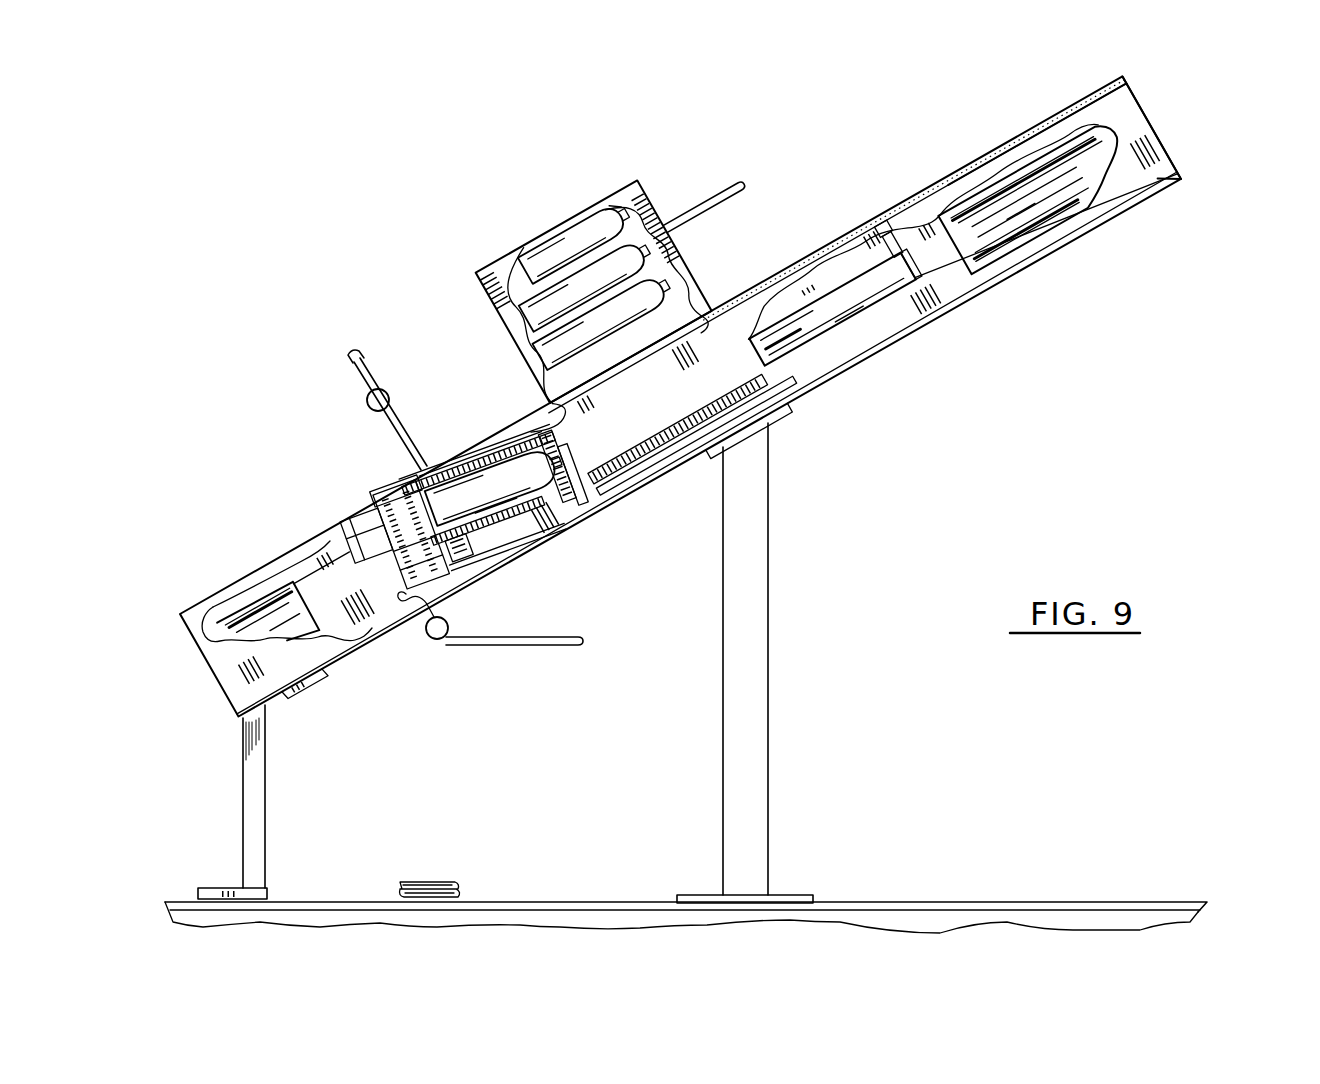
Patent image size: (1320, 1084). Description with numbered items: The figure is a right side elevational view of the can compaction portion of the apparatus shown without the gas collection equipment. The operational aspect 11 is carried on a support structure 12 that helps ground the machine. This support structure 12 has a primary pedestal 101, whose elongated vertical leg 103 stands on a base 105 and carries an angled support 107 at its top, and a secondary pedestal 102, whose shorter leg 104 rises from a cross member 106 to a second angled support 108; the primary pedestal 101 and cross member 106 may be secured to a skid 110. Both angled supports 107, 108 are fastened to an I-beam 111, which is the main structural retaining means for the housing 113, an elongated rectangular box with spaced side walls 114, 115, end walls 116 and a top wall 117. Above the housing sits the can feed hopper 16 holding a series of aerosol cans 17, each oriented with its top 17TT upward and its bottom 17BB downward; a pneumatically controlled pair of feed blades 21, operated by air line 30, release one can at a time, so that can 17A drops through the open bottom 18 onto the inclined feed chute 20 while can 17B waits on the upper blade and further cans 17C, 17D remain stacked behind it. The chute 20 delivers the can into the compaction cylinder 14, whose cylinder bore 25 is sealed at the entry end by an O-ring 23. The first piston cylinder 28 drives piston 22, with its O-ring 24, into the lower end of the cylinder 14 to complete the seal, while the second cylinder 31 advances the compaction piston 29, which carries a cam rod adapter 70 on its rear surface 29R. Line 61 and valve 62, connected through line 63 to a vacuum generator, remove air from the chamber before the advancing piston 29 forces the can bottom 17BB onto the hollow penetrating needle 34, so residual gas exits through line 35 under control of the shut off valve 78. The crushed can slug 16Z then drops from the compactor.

The operational aspect 11 is at (360, 250).
The support structure 12 is at (822, 600).
The compaction cylinder 14 is at (528, 543).
The can feed hopper 16 is at (506, 259).
The cans 17 is at (624, 212).
The first can 17A is at (496, 486).
The second can 17B is at (603, 320).
The third cartridge 17C is at (587, 283).
The fourth cartridge 17D is at (576, 242).
The can bottom 17BB is at (462, 541).
The can top 17TT is at (596, 498).
The open bottom 18 is at (690, 298).
The inclined feed chute 20 is at (778, 394).
The feed blades 21 is at (545, 399).
The piston 22 is at (385, 540).
The O-ring 23 is at (632, 481).
The O-ring 24 is at (372, 548).
The cylinder bore 25 is at (495, 440).
The first piston cylinder 28 is at (287, 606).
The compaction piston 29 is at (832, 309).
The rear surface 29R is at (908, 280).
The air line 30 is at (712, 198).
The second cylinder 31 is at (1039, 197).
The hollow penetrating needle 34 is at (402, 497).
The line 35 is at (555, 648).
The line 61 is at (412, 452).
The valve 62 is at (368, 403).
The line 63 is at (354, 366).
The cam rod adapter 70 is at (902, 252).
The 4-way shut off valve 78 is at (434, 638).
The primary pedestal 101 is at (786, 778).
The secondary pedestal 102 is at (240, 777).
The leg 103 is at (746, 690).
The leg 104 is at (254, 810).
The base 105 is at (814, 895).
The cross member 106 is at (216, 888).
The angled support 107 is at (778, 418).
The second angled support 108 is at (300, 676).
The skid 110 is at (1004, 916).
The I-beam 111 is at (864, 343).
The housing 113 is at (1008, 138).
The right side wall 114 is at (1168, 174).
The side wall 115 is at (848, 262).
The end walls 116 is at (1146, 130).
The top wall 117 is at (1068, 116).
The can slug 16Z is at (436, 884).